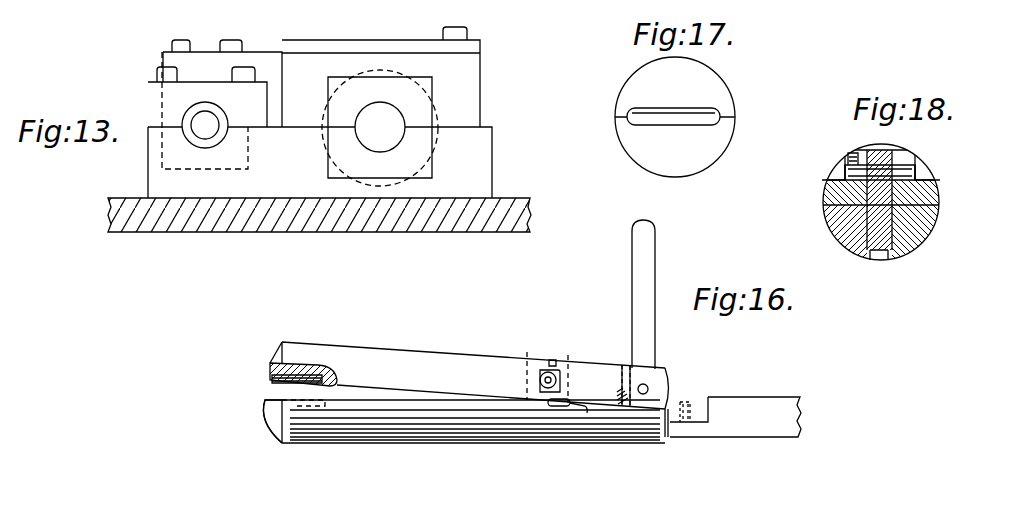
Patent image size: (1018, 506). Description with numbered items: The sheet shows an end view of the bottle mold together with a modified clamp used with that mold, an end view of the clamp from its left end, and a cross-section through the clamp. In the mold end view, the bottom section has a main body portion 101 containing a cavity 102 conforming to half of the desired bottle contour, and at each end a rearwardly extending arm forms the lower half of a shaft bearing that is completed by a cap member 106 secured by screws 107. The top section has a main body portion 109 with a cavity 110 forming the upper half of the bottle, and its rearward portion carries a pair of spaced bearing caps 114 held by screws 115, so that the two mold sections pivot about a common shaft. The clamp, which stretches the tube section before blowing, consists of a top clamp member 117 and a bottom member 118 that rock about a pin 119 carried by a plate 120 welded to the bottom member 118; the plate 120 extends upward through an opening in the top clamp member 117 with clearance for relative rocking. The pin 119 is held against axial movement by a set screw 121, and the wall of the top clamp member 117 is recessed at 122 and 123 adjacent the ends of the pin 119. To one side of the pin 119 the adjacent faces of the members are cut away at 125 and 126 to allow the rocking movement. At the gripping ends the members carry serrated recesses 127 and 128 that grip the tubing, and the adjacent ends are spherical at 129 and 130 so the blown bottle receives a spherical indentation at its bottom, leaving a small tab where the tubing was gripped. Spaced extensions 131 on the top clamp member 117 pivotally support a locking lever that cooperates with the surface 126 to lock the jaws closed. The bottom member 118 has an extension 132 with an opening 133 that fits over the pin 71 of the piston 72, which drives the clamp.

In FIG. 16, the pin 71 is at (683, 403).
In FIG. 16, the piston 72 is at (790, 418).
In FIG. 13, the main body portion 101 is at (477, 155).
In FIG. 13, the cavity 102 is at (372, 185).
In FIG. 13, the cap member 106 is at (148, 96).
In FIG. 13, the screws 107 is at (157, 73).
In FIG. 13, the main body portion 109 is at (468, 78).
In FIG. 13, the cavity 110 is at (383, 68).
In FIG. 13, the bearing caps 114 is at (248, 146).
In FIG. 13, the screws 115 is at (215, 50).
In FIG. 17, the top clamp member 117 is at (726, 85).
In FIG. 18, the top clamp member 117 is at (938, 198).
In FIG. 16, the top clamp member 117 is at (415, 357).
In FIG. 17, the bottom member 118 is at (633, 152).
In FIG. 18, the bottom member 118 is at (840, 228).
In FIG. 16, the bottom member 118 is at (447, 428).
In FIG. 18, the pin 119 is at (900, 170).
In FIG. 16, the pin 119 is at (546, 374).
In FIG. 18, the plate 120 is at (882, 240).
In FIG. 16, the plate 120 is at (522, 410).
In FIG. 18, the set screw 121 is at (853, 153).
In FIG. 18, the recess 122 is at (834, 175).
In FIG. 18, the recess 123 is at (925, 178).
In FIG. 16, the cut-away face 125 is at (577, 402).
In FIG. 16, the cut-away surface 126 is at (587, 413).
In FIG. 16, the recess 127 is at (270, 378).
In FIG. 17, the recess 128 is at (677, 138).
In FIG. 16, the recess 128 is at (295, 406).
In FIG. 16, the spherical end 129 is at (280, 350).
In FIG. 16, the spherical end 130 is at (268, 425).
In FIG. 16, the spaced extensions 131 is at (657, 380).
In FIG. 16, the extension 132 is at (702, 408).
In FIG. 16, the opening 133 is at (670, 440).